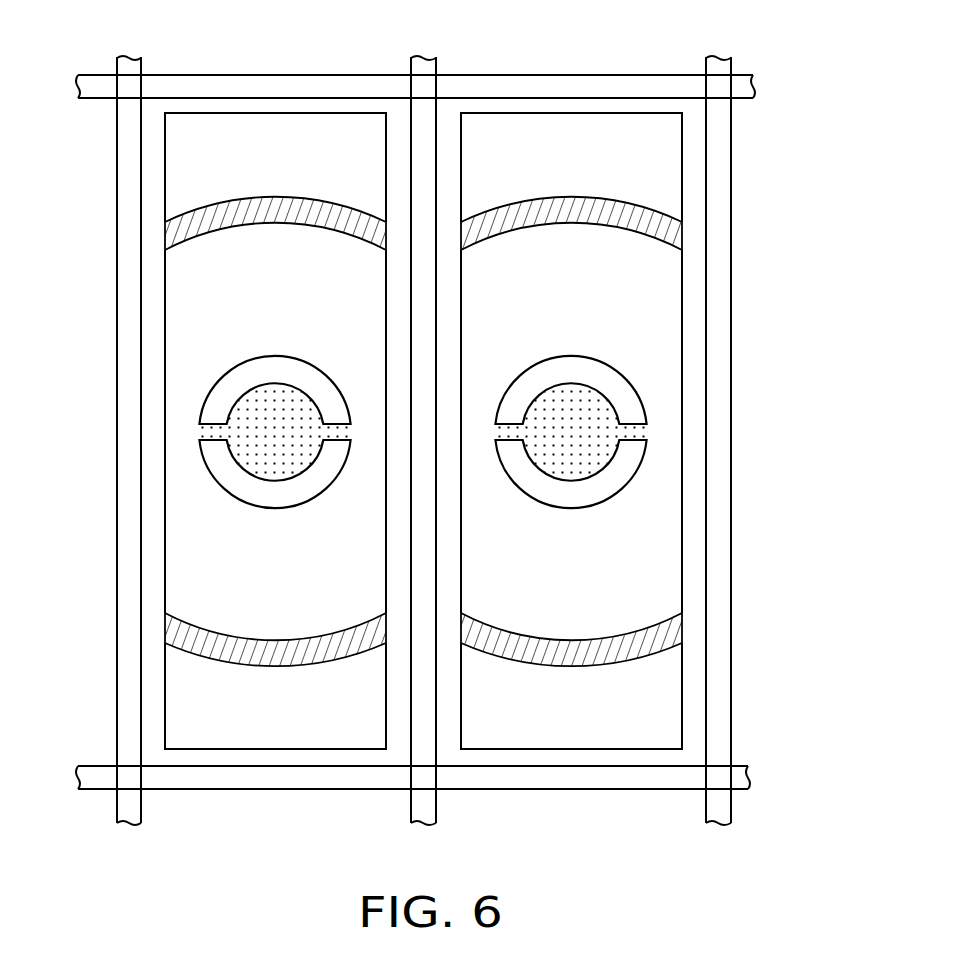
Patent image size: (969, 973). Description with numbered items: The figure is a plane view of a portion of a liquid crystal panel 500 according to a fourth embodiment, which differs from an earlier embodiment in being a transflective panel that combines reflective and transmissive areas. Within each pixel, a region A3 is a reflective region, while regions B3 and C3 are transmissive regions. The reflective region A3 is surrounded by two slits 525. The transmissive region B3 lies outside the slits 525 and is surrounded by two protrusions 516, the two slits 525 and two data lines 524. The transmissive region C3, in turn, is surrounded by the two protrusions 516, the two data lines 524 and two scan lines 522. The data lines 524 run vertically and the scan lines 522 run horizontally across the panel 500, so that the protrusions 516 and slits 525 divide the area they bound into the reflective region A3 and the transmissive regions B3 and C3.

The liquid crystal panel 500 is at (454, 27).
The scan line 522 is at (738, 91).
The data line 524 is at (723, 67).
The protrusion 516 is at (652, 230).
The slit 525 is at (608, 383).
The region A3 is at (582, 415).
The region B3 is at (642, 290).
The region C3 is at (642, 168).